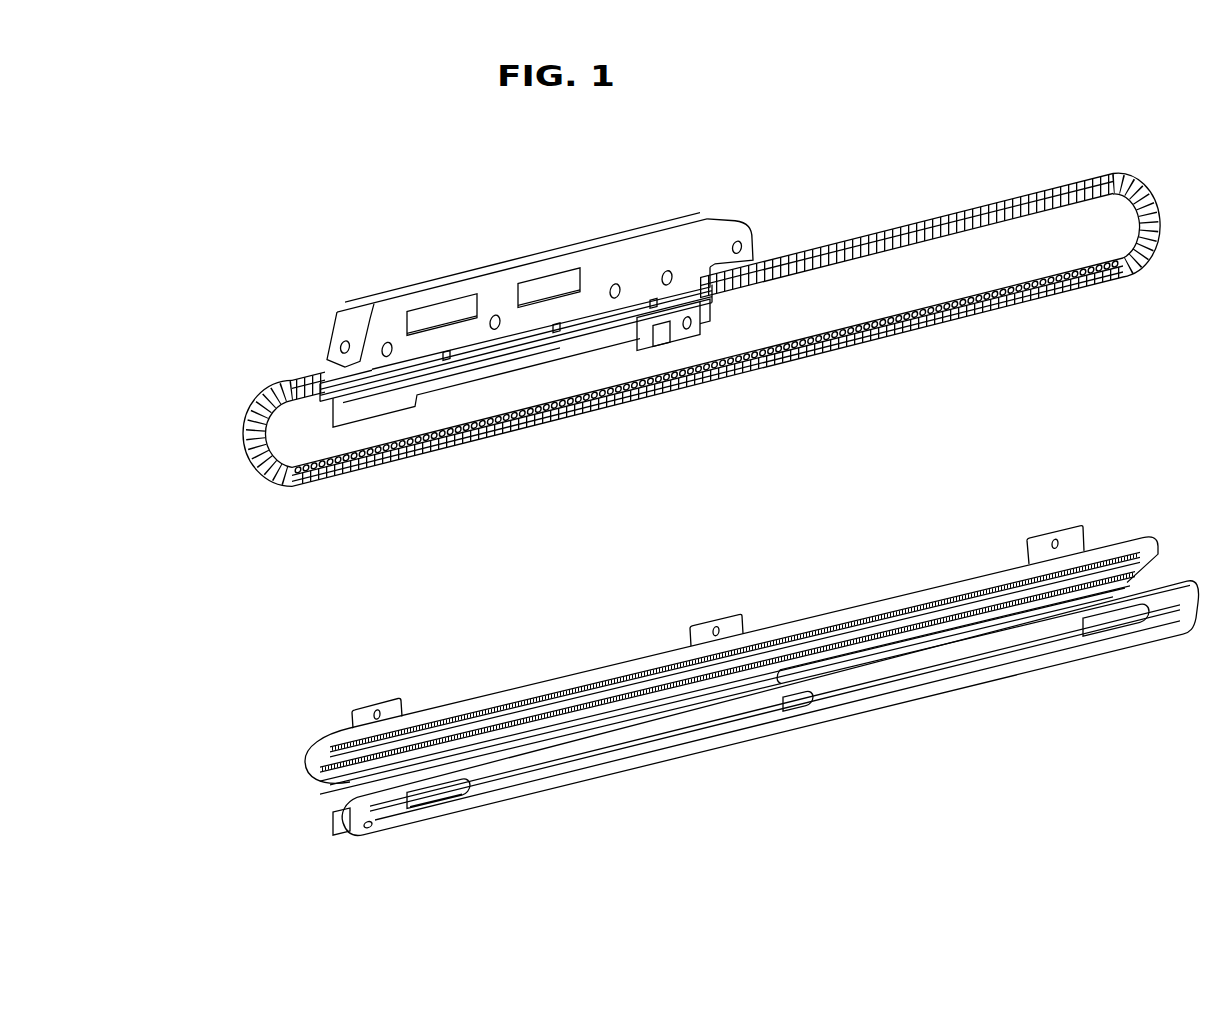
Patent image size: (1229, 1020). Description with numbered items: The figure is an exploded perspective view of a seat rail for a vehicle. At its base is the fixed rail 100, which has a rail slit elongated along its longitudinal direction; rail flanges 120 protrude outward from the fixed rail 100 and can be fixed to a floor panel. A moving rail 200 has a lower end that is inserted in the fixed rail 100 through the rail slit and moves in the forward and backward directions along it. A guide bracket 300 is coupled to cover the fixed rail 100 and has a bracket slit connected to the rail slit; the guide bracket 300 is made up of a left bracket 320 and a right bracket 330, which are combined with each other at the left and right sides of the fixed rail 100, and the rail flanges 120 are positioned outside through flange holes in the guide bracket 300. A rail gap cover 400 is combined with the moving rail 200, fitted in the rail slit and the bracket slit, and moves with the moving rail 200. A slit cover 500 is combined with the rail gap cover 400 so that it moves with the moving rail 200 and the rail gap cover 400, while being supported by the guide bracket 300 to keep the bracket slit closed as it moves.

The fixed rail 100 is at (862, 640).
The rail flanges 120 is at (387, 713).
The moving rail 200 is at (587, 253).
The guide bracket 300 is at (599, 772).
The left bracket 320 is at (567, 680).
The right bracket 330 is at (652, 752).
The rail gap cover 400 is at (538, 340).
The slit cover 500 is at (252, 427).